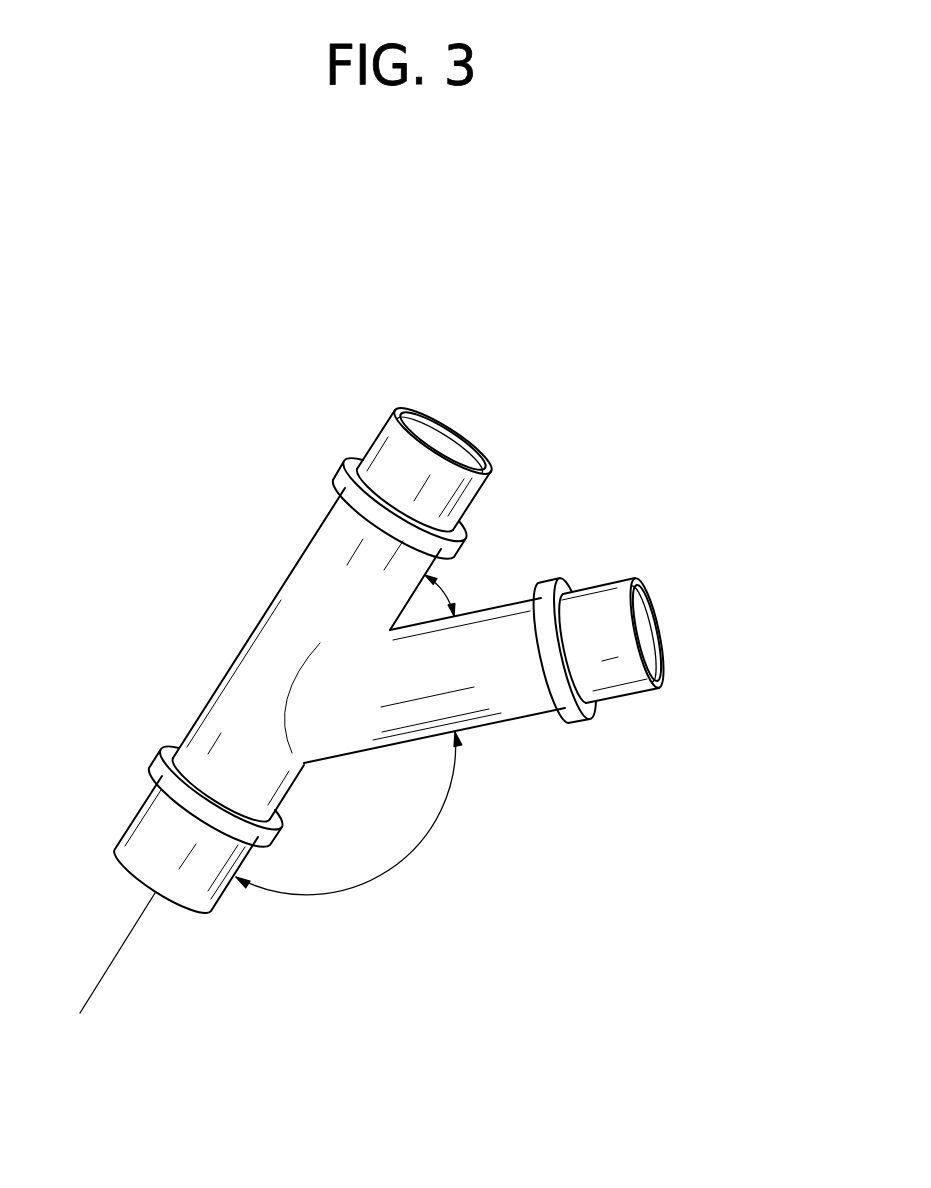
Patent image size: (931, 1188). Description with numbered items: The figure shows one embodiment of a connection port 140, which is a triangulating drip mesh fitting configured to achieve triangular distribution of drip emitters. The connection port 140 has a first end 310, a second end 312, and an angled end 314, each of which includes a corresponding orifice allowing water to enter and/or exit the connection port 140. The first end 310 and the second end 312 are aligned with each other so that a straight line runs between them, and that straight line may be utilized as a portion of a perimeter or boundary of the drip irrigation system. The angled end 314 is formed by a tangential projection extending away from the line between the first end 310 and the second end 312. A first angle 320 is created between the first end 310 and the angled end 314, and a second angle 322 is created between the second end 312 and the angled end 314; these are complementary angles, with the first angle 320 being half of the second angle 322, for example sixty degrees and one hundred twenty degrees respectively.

The connection port 140 is at (247, 363).
The first end 310 is at (126, 940).
The second end 312 is at (472, 417).
The angled end 314 is at (682, 627).
The first angle 320 is at (447, 587).
The second angle 322 is at (380, 873).